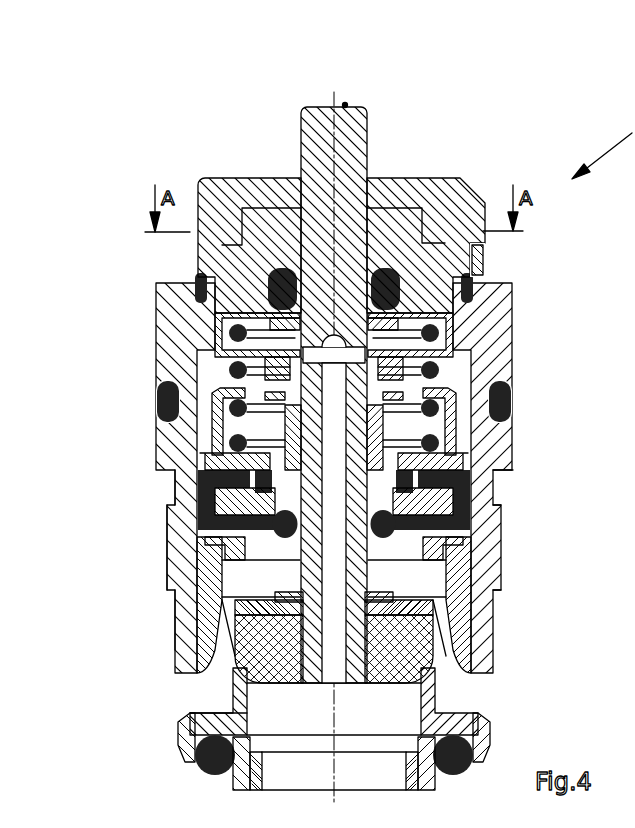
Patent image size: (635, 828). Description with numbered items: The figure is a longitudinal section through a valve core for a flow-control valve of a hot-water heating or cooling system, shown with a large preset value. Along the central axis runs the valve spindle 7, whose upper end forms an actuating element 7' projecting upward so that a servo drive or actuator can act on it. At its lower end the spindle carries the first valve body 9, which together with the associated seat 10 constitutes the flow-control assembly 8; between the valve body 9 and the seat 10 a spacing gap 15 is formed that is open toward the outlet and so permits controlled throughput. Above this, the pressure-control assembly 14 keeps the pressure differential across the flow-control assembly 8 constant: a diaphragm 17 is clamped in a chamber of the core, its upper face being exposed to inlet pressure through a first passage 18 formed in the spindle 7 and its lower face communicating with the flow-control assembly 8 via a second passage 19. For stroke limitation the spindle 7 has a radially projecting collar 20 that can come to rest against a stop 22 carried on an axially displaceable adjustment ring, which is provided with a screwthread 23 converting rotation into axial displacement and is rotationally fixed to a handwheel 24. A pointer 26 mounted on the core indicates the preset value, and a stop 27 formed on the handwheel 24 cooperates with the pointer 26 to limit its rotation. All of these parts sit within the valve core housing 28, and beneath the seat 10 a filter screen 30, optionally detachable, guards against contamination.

The valve spindle 7 is at (451, 378).
The actuating element 7' is at (475, 76).
The flow-control assembly 8 is at (238, 663).
The first valve body 9 is at (410, 645).
The seat 10 is at (463, 678).
The pressure-control assembly 14 is at (190, 545).
The spacing gap 15 is at (217, 697).
The diaphragm 17 is at (210, 467).
The first passage 18 is at (200, 278).
The second passage 19 is at (200, 560).
The radially projecting collar 20 is at (160, 348).
The stop 22 is at (497, 298).
The screwthread 23 is at (507, 333).
The handwheel 24 is at (205, 185).
The pointer 26 is at (487, 248).
The stop 27 is at (485, 200).
The valve core housing 28 is at (505, 443).
The filter screen 30 is at (425, 732).